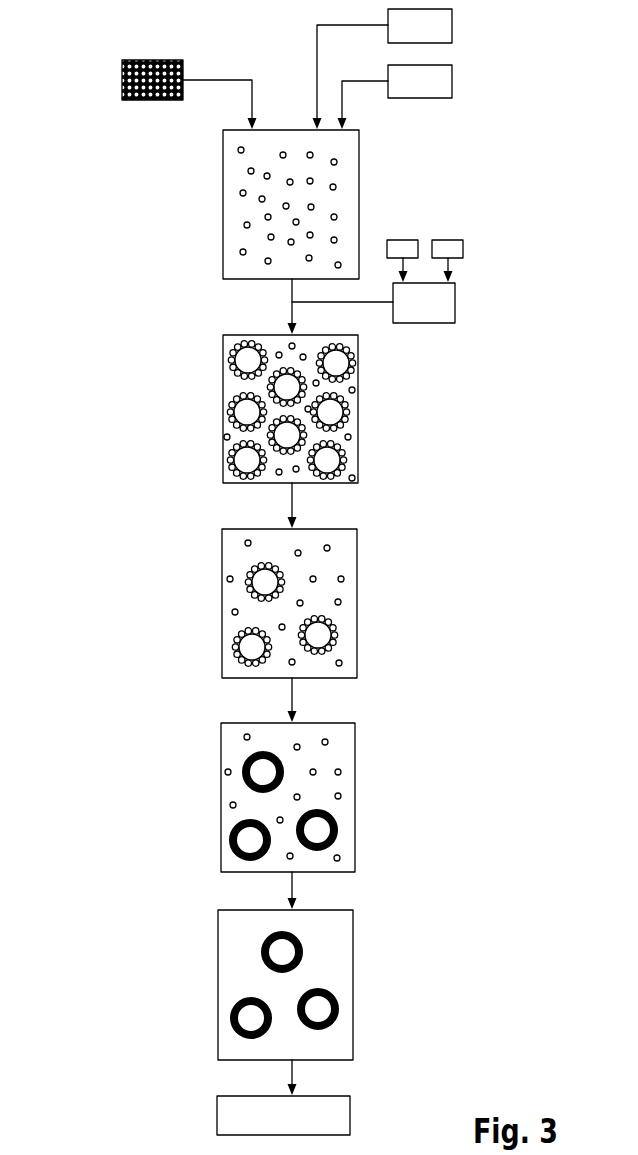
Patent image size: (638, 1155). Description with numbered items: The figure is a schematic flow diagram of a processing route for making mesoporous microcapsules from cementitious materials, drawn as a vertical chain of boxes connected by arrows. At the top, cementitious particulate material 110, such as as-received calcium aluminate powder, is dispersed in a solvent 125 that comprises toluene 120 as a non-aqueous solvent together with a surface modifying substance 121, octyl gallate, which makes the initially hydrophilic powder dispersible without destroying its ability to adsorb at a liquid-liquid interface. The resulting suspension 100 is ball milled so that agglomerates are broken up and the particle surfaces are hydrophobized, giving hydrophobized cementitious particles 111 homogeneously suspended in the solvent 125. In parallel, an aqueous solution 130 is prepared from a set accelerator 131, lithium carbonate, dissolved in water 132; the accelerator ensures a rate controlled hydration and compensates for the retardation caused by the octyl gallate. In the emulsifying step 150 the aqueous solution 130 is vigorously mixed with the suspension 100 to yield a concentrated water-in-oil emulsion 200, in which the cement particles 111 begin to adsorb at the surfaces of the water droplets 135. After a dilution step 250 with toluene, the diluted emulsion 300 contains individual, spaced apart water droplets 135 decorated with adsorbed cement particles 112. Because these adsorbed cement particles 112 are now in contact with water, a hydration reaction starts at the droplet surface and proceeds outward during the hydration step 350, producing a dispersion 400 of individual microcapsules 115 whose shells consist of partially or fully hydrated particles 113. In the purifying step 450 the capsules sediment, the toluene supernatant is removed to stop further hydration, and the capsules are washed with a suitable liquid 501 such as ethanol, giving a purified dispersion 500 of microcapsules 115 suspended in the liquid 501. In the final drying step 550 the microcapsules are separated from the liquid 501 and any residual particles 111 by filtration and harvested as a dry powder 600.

The suspension 100 is at (360, 135).
The cementitious particulate material 110 is at (120, 80).
The hydrophobized cementitious particles 111 is at (243, 193).
The adsorbed cement particles 112 is at (237, 347).
The partially or fully hydrated particles 113 is at (232, 835).
The microcapsules 115 is at (222, 814).
The toluene 120 is at (438, 88).
The surface modifying substance 121 is at (438, 25).
The solvent 125 is at (240, 235).
The aqueous solution 130 is at (447, 302).
The set accelerator 131 is at (397, 248).
The water 132 is at (441, 248).
The water droplets 135 is at (245, 362).
The emulsifying step 150 is at (292, 313).
The concentrated water-in-oil emulsion 200 is at (358, 343).
The dilution step 250 is at (292, 502).
The diluted emulsion 300 is at (357, 540).
The hydration step 350 is at (292, 690).
The dispersion 400 is at (355, 737).
The purifying step 450 is at (292, 883).
The purified dispersion 500 is at (353, 923).
The liquid 501 is at (340, 972).
The drying step 550 is at (292, 1082).
The dry powder 600 is at (350, 1117).